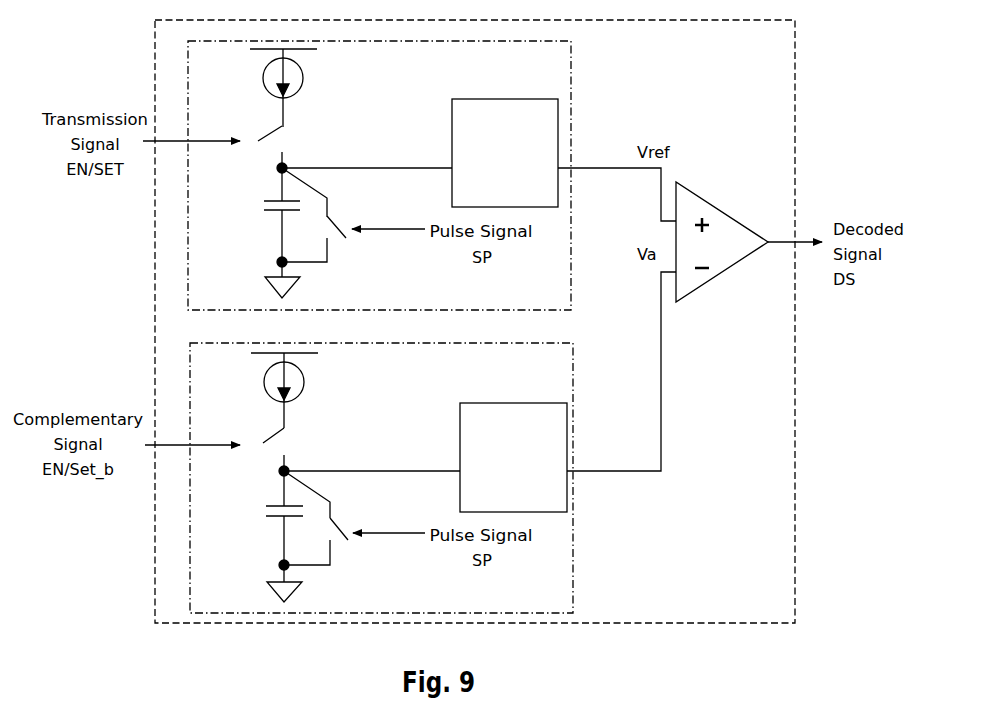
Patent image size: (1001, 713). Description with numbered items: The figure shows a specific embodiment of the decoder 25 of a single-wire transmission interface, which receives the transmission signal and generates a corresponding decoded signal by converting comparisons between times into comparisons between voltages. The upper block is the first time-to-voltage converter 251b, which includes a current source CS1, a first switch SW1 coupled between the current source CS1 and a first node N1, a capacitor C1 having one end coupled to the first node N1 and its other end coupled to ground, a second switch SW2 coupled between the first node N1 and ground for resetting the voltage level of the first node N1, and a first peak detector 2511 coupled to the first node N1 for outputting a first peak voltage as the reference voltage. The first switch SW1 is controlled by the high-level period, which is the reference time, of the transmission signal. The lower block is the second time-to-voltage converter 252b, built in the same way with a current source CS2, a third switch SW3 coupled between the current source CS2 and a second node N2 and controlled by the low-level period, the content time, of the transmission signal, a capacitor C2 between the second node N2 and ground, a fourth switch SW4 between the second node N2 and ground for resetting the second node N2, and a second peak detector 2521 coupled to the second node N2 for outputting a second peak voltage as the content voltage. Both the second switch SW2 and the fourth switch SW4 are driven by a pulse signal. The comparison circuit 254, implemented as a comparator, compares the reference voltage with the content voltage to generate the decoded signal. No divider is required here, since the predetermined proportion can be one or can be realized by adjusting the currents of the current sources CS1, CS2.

The decoder 25 is at (775, 600).
The first time-to-voltage converter 251b is at (572, 70).
The second time-to-voltage converter 252b is at (574, 373).
The first peak detector 2511 is at (484, 192).
The second peak detector 2521 is at (492, 497).
The comparison circuit 254 is at (697, 191).
The current source CS1 is at (262, 73).
The current source CS2 is at (263, 377).
The first switch SW1 is at (270, 157).
The second switch SW2 is at (345, 216).
The third switch SW3 is at (272, 460).
The fourth switch SW4 is at (346, 520).
The first node N1 is at (364, 157).
The second node N2 is at (369, 464).
The capacitor C1 is at (286, 233).
The capacitor C2 is at (287, 536).